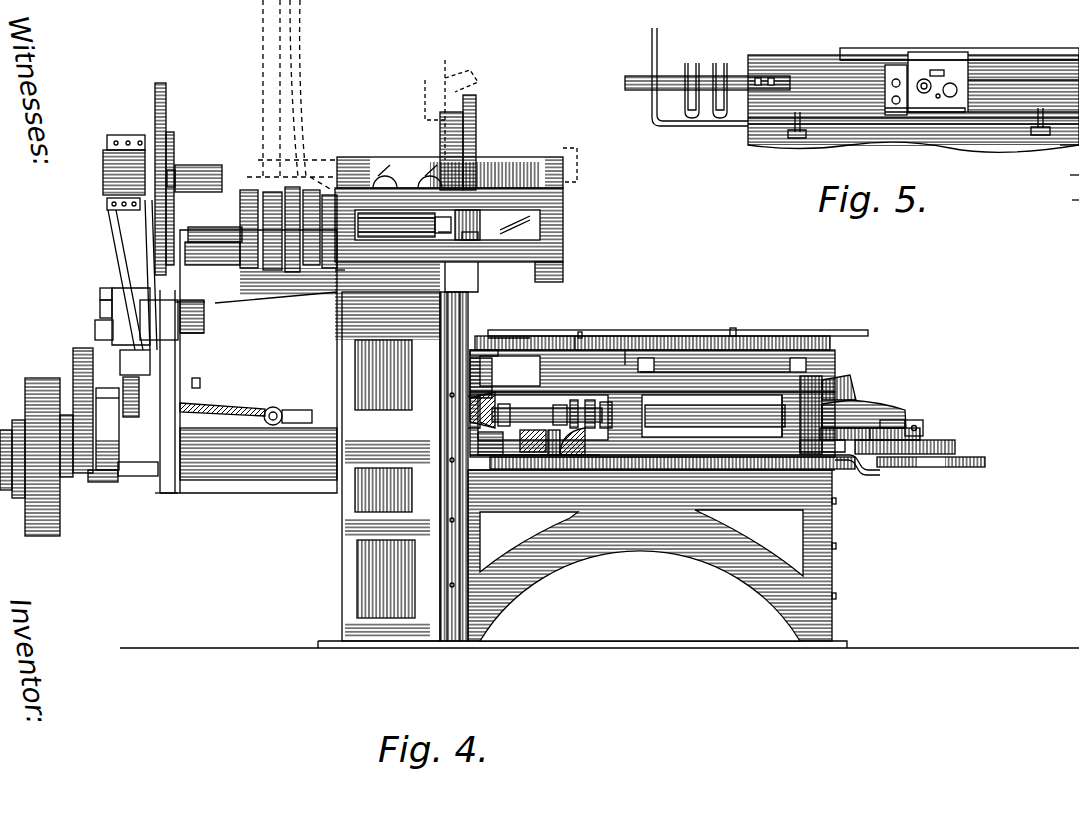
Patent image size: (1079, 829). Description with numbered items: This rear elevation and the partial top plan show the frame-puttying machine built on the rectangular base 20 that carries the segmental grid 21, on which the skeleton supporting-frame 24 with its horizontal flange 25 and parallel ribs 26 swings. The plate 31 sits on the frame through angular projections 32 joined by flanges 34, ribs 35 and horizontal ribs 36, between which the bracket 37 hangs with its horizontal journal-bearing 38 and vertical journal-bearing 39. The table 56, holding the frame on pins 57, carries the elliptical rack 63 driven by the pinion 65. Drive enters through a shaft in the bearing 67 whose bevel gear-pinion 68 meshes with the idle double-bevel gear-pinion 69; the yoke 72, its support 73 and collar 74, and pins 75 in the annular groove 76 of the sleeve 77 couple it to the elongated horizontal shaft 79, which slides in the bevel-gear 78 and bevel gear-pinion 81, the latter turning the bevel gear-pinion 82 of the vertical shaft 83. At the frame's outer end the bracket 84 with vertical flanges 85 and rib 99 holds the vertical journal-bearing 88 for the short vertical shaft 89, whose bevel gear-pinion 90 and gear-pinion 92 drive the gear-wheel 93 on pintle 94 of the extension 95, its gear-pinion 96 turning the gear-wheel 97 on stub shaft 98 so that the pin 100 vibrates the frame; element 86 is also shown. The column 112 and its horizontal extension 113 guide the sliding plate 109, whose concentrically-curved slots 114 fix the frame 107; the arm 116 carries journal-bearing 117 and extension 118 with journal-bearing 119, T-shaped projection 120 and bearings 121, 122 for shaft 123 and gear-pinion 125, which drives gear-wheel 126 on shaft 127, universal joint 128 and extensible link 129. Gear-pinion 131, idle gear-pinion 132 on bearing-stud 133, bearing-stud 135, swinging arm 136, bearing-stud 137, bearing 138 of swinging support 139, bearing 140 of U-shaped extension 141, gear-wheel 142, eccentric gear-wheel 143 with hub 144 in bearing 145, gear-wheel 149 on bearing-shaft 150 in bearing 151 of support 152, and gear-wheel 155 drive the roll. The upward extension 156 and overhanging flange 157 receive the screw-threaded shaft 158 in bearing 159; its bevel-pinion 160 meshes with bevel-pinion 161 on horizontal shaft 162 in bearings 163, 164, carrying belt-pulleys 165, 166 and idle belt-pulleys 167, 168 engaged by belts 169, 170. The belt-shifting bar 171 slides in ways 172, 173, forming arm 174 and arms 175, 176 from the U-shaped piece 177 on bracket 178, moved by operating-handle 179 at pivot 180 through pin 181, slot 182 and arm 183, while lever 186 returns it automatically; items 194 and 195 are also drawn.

In FIG. 4, the rectangular base 20 is at (715, 560).
In FIG. 4, the segmental grid 21 is at (760, 470).
In FIG. 4, the supporting-frame 24 is at (790, 390).
In FIG. 4, the horizontal flange 25 is at (680, 455).
In FIG. 4, the parallel ribs 26 is at (600, 455).
In FIG. 4, the plate 31 is at (665, 350).
In FIG. 4, the angular projections 32 is at (632, 350).
In FIG. 4, the flanges 34 is at (750, 355).
In FIG. 4, the ribs 35 is at (580, 340).
In FIG. 4, the horizontal ribs 36 is at (530, 338).
In FIG. 4, the bracket 37 is at (510, 408).
In FIG. 4, the horizontal journal-bearing 38 is at (505, 415).
In FIG. 4, the vertical journal-bearing 39 is at (470, 372).
In FIG. 4, the table 56 is at (855, 332).
In FIG. 4, the pins 57 is at (578, 335).
In FIG. 4, the elliptical rack 63 is at (640, 343).
In FIG. 4, the pinion 65 is at (440, 348).
In FIG. 4, the bearing 67 is at (492, 446).
In FIG. 4, the bevel gear-pinion 68 is at (535, 448).
In FIG. 4, the idle double-bevel gear-pinion 69 is at (490, 420).
In FIG. 4, the yoke 72 is at (572, 430).
In FIG. 4, the support 73 is at (570, 445).
In FIG. 4, the collar 74 is at (560, 455).
In FIG. 4, the pins 75 is at (604, 400).
In FIG. 4, the annular groove 76 is at (588, 400).
In FIG. 4, the sleeve 77 is at (575, 402).
In FIG. 4, the bevel-gear 78 is at (558, 408).
In FIG. 4, the elongated horizontal shaft 79 is at (690, 408).
In FIG. 4, the bevel gear-pinion 81 is at (475, 420).
In FIG. 4, the bevel gear-pinion 82 is at (470, 405).
In FIG. 4, the vertical shaft 83 is at (470, 352).
In FIG. 4, the bracket 84 is at (850, 410).
In FIG. 4, the vertical flanges 85 is at (800, 400).
In FIG. 4, the wall 86 is at (810, 415).
In FIG. 4, the vertical journal-bearing 88 is at (845, 382).
In FIG. 4, the short vertical shaft 89 is at (815, 440).
In FIG. 4, the bevel gear-pinion 90 is at (838, 375).
In FIG. 4, the gear-pinion 92 is at (830, 445).
In FIG. 4, the gear-wheel 93 is at (885, 428).
In FIG. 4, the pintle 94 is at (870, 425).
In FIG. 4, the extension 95 is at (900, 428).
In FIG. 4, the gear-pinion 96 is at (860, 462).
In FIG. 4, the gear-wheel 97 is at (950, 447).
In FIG. 4, the stub shaft 98 is at (920, 428).
In FIG. 4, the vertical rib 99 is at (880, 425).
In FIG. 4, the pin 100 is at (900, 465).
In FIG. 4, the frame 107 is at (465, 283).
In FIG. 5, the frame 107 is at (980, 80).
In FIG. 4, the sliding plate 109 is at (520, 163).
In FIG. 5, the sliding plate 109 is at (1005, 50).
In FIG. 4, the column 112 is at (387, 451).
In FIG. 4, the horizontal extension 113 is at (552, 232).
In FIG. 5, the horizontal extension 113 is at (852, 105).
In FIG. 4, the concentrically-curved slots 114 is at (432, 170).
In FIG. 4, the arm 116 is at (255, 290).
In FIG. 4, the journal-bearing 117 is at (200, 232).
In FIG. 4, the extension 118 is at (190, 355).
In FIG. 4, the journal-bearing 119 is at (172, 490).
In FIG. 4, the T-shaped projection 120 is at (145, 440).
In FIG. 4, the bearing 121 is at (108, 395).
In FIG. 4, the bearing 122 is at (103, 478).
In FIG. 4, the shaft 123 is at (118, 470).
In FIG. 4, the gear-pinion 125 is at (80, 475).
In FIG. 4, the gear-wheel 126 is at (78, 360).
In FIG. 4, the shaft 127 is at (238, 408).
In FIG. 4, the universal joint 128 is at (275, 408).
In FIG. 4, the extensible link 129 is at (325, 410).
In FIG. 4, the gear-pinion 131 is at (140, 398).
In FIG. 4, the idle gear-pinion 132 is at (145, 378).
In FIG. 4, the bearing-stud 133 is at (195, 380).
In FIG. 4, the bearing-stud 135 is at (95, 333).
In FIG. 4, the swinging arm 136 is at (98, 312).
In FIG. 4, the bearing-stud 137 is at (98, 296).
In FIG. 4, the bearing 138 is at (118, 290).
In FIG. 4, the swinging support 139 is at (112, 246).
In FIG. 4, the bearing 140 is at (200, 318).
In FIG. 4, the U-shaped extension 141 is at (200, 345).
In FIG. 4, the gear-wheel 142 is at (160, 300).
In FIG. 4, the eccentric gear-wheel 143 is at (165, 98).
In FIG. 4, the hub 144 is at (107, 160).
In FIG. 4, the bearing 145 is at (118, 172).
In FIG. 4, the gear-wheel 149 is at (172, 143).
In FIG. 4, the bearing-shaft 150 is at (220, 178).
In FIG. 4, the bearing 151 is at (196, 170).
In FIG. 4, the support 152 is at (172, 218).
In FIG. 4, the gear-wheel 155 is at (145, 245).
In FIG. 4, the upward extension 156 is at (478, 135).
In FIG. 4, the overhanging flange 157 is at (476, 117).
In FIG. 4, the screw-threaded shaft 158 is at (475, 148).
In FIG. 5, the screw-threaded shaft 158 is at (955, 85).
In FIG. 4, the bearing 159 is at (472, 230).
In FIG. 4, the bevel-pinion 160 is at (478, 218).
In FIG. 4, the bevel-pinion 161 is at (450, 240).
In FIG. 4, the horizontal shaft 162 is at (440, 232).
In FIG. 4, the bearing 163 is at (430, 248).
In FIG. 4, the bearing 164 is at (400, 232).
In FIG. 4, the belt-pulley 165 is at (250, 218).
In FIG. 4, the belt-pulley 166 is at (338, 275).
In FIG. 4, the idle belt-pulley 167 is at (270, 262).
In FIG. 4, the idle belt-pulley 168 is at (300, 265).
In FIG. 4, the belt 169 is at (263, 105).
In FIG. 4, the belt 170 is at (296, 122).
In FIG. 5, the belt-shifting bar 171 is at (985, 118).
In FIG. 5, the way 172 is at (790, 132).
In FIG. 5, the way 173 is at (1040, 130).
In FIG. 5, the arm 174 is at (652, 50).
In FIG. 5, the arm 175 is at (690, 63).
In FIG. 5, the arm 176 is at (720, 63).
In FIG. 5, the U-shaped piece 177 is at (683, 112).
In FIG. 5, the bracket 178 is at (640, 85).
In FIG. 5, the operating-handle 179 is at (1078, 32).
In FIG. 5, the pivot 180 is at (1070, 95).
In FIG. 5, the pin 181 is at (1078, 210).
In FIG. 5, the elongated slot 182 is at (1075, 185).
In FIG. 5, the arm 183 is at (1078, 160).
In FIG. 5, the lever 186 is at (888, 75).
In FIG. 5, the screw 194 is at (924, 80).
In FIG. 5, the pin 195 is at (924, 83).